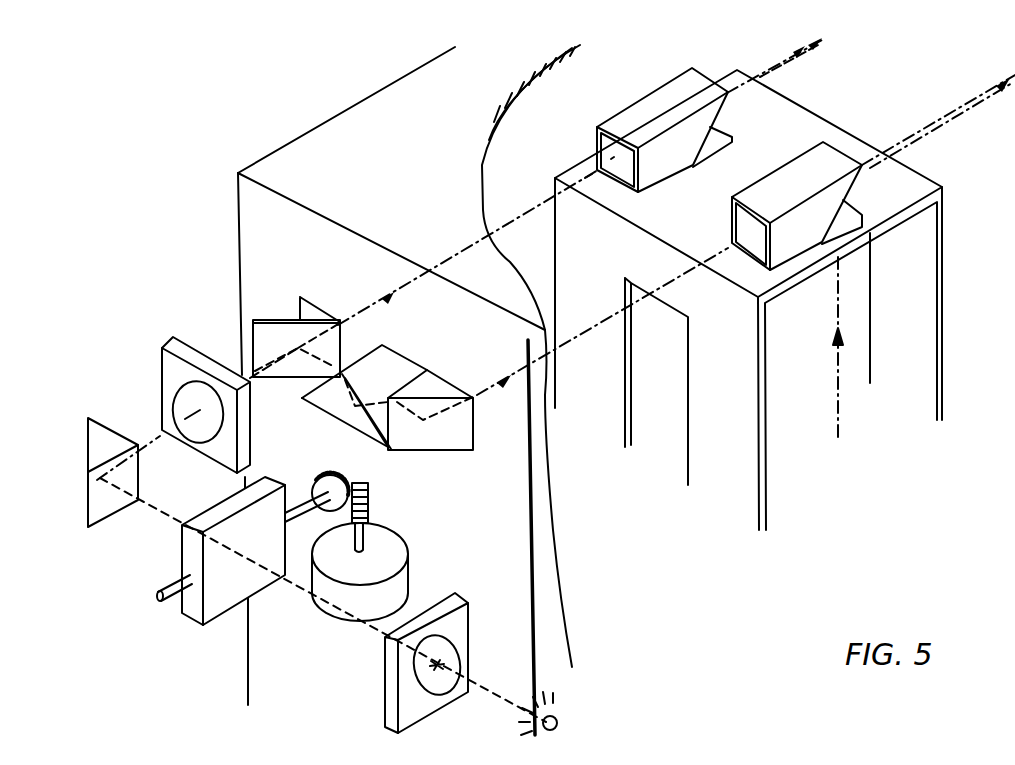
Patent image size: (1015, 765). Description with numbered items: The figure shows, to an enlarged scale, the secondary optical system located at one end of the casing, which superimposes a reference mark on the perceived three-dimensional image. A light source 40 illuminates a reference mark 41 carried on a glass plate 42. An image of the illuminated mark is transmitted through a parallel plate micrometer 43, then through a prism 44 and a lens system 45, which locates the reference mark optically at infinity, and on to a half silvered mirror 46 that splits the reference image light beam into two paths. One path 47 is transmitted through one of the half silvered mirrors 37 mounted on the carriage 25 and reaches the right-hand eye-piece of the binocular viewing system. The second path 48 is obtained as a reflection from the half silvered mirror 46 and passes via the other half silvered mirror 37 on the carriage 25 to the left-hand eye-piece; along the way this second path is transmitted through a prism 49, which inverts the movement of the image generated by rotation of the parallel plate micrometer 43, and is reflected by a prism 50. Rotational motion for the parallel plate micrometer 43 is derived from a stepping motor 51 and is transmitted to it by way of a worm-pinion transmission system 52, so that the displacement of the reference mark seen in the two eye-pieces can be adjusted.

The carriage 25 is at (727, 477).
The half silvered mirror 37 is at (703, 75).
The light source 40 is at (559, 719).
The reference mark 41 is at (420, 675).
The glass plate 42 is at (423, 677).
The parallel plate micrometer 43 is at (218, 597).
The prism 44 is at (103, 505).
The lens system 45 is at (183, 398).
The half silvered mirror 46 is at (272, 332).
The first path 47 is at (520, 213).
The second path 48 is at (570, 343).
The prism 49 is at (380, 367).
The prism 50 is at (448, 437).
The stepping motor 51 is at (400, 583).
The worm-pinion transmission system 52 is at (368, 498).